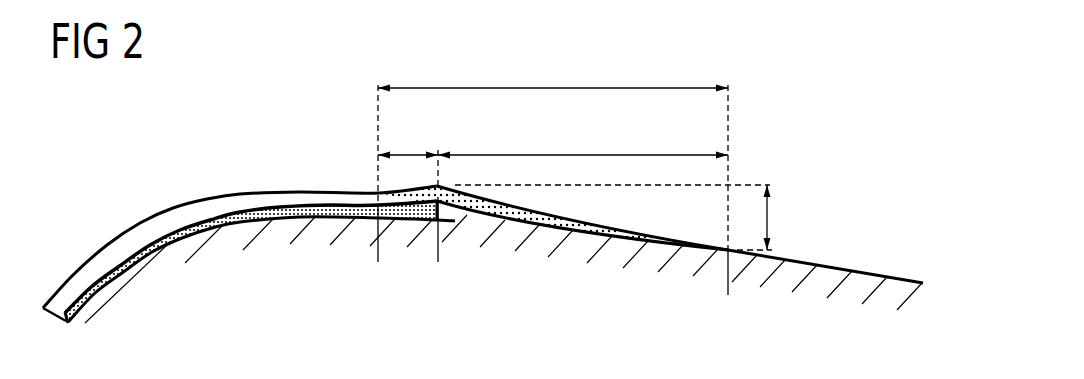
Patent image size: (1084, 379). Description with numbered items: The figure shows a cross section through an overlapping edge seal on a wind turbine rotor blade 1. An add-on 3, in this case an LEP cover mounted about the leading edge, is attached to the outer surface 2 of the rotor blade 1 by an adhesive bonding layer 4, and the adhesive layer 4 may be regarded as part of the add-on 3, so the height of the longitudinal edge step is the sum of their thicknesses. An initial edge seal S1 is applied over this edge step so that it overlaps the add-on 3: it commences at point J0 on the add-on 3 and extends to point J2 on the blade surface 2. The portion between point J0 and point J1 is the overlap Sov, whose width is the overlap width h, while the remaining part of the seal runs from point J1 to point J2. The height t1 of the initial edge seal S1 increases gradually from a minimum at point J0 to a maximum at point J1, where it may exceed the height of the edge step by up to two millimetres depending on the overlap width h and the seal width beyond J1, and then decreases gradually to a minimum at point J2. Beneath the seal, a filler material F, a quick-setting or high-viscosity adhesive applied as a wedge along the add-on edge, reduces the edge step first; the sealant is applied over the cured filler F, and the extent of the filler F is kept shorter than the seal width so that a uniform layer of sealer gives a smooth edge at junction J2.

The rotor blade 1 is at (899, 271).
The outer surface 2 is at (845, 268).
The add-on 3 is at (221, 208).
The adhesive bonding layer 4 is at (231, 226).
The filler material F is at (453, 218).
The initial edge seal S1 is at (547, 228).
The overlap Sov is at (430, 208).
The point J0 is at (376, 199).
The point J1 is at (436, 231).
The point J2 is at (729, 211).
The overlap width h is at (408, 138).
The height of the initial edge seal t1 is at (628, 217).